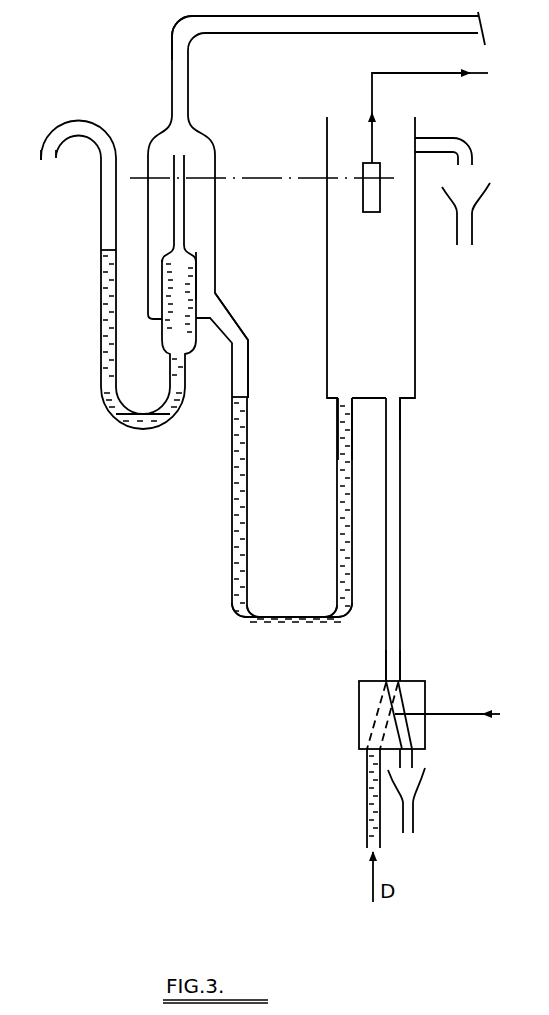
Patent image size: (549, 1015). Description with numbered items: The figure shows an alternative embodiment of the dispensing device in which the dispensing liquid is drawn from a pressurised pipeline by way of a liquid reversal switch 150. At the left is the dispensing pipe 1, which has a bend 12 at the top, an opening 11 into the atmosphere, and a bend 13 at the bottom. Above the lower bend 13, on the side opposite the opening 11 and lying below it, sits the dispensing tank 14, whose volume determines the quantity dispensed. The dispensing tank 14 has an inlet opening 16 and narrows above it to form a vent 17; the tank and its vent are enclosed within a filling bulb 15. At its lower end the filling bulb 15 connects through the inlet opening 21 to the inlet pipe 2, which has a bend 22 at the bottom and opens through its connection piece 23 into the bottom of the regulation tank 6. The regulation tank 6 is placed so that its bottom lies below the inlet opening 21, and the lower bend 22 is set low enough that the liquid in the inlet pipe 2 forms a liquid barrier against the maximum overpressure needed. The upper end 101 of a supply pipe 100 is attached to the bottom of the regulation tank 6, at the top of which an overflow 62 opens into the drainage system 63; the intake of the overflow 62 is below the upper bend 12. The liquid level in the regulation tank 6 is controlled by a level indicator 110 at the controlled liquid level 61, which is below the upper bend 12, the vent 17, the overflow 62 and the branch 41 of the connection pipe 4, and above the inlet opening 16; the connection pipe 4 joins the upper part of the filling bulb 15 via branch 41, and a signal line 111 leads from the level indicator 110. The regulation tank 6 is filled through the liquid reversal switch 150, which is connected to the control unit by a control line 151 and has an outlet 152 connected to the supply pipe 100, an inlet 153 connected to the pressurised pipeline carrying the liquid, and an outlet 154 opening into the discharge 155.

The dispensing pipe 1 is at (101, 315).
The inlet pipe 2 is at (232, 510).
The connection pipe 4 is at (328, 63).
The regulation tank 6 is at (415, 310).
The opening 11 is at (59, 165).
The bend 12 is at (78, 127).
The bend 13 is at (143, 420).
The dispensing tank 14 is at (162, 333).
The filling bulb 15 is at (216, 157).
The inlet opening 16 is at (202, 262).
The vent 17 is at (178, 199).
The inlet opening 21 is at (224, 344).
The bend 22 is at (292, 599).
The connection piece 23 is at (332, 428).
The branch 41 is at (201, 39).
The controlled liquid level 61 is at (265, 173).
The overflow 62 is at (443, 139).
The drainage system 63 is at (473, 214).
The supply pipe 100 is at (399, 590).
The upper end 101 is at (422, 419).
The level indicator 110 is at (369, 199).
The detector output 111 is at (430, 108).
The liquid reversal switch 150 is at (374, 715).
The control line 151 is at (447, 706).
The outlet 152 is at (414, 665).
The inlet 153 is at (356, 798).
The outlet 154 is at (432, 758).
The discharge 155 is at (427, 800).